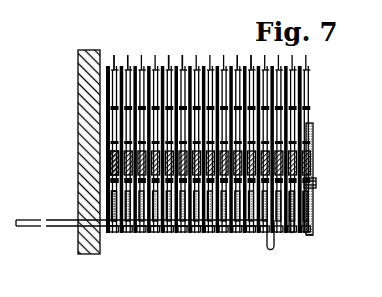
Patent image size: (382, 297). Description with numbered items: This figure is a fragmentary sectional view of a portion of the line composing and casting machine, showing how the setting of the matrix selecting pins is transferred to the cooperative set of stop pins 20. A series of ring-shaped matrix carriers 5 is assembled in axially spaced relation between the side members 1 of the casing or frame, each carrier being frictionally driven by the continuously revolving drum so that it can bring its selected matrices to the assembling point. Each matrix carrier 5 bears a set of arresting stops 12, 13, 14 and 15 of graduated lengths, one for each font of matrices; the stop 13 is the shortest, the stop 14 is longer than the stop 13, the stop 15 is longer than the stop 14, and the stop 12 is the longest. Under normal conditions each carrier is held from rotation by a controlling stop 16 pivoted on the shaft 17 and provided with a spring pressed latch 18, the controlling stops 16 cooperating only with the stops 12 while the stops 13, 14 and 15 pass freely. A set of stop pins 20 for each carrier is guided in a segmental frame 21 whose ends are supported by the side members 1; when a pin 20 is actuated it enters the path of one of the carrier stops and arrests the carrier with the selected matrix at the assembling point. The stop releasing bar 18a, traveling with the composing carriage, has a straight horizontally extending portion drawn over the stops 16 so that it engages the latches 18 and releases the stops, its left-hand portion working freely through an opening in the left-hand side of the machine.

The side member 1 is at (70, 62).
The matrix carrier 5 is at (128, 56).
The arresting stop 15 is at (175, 57).
The arresting stop 14 is at (251, 55).
The arresting stop 12 is at (282, 83).
The arresting stop 13 is at (293, 103).
The controlling stop 16 is at (306, 122).
The shaft 17 is at (309, 173).
The spring pressed latch 18 is at (290, 206).
The stop releasing bar 18a is at (50, 219).
The stop pin 20 is at (112, 150).
The segmental frame 21 is at (101, 168).